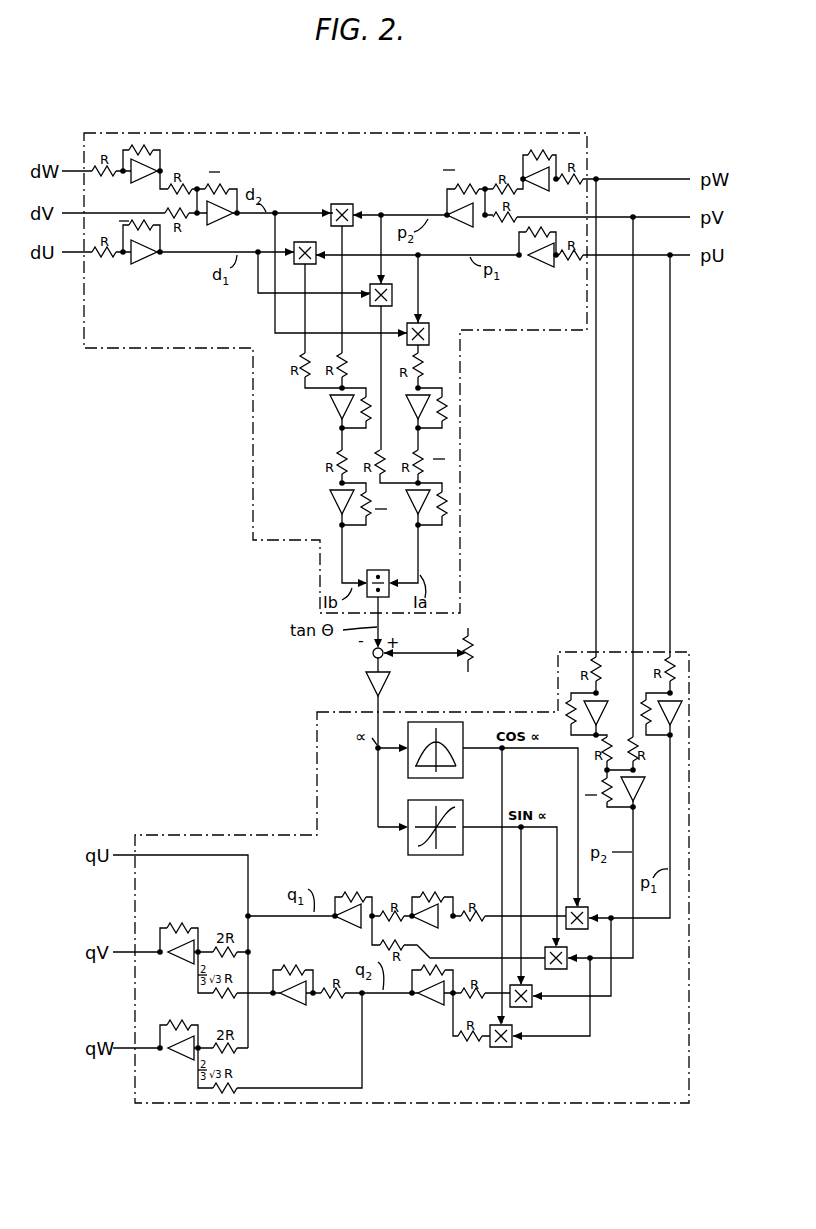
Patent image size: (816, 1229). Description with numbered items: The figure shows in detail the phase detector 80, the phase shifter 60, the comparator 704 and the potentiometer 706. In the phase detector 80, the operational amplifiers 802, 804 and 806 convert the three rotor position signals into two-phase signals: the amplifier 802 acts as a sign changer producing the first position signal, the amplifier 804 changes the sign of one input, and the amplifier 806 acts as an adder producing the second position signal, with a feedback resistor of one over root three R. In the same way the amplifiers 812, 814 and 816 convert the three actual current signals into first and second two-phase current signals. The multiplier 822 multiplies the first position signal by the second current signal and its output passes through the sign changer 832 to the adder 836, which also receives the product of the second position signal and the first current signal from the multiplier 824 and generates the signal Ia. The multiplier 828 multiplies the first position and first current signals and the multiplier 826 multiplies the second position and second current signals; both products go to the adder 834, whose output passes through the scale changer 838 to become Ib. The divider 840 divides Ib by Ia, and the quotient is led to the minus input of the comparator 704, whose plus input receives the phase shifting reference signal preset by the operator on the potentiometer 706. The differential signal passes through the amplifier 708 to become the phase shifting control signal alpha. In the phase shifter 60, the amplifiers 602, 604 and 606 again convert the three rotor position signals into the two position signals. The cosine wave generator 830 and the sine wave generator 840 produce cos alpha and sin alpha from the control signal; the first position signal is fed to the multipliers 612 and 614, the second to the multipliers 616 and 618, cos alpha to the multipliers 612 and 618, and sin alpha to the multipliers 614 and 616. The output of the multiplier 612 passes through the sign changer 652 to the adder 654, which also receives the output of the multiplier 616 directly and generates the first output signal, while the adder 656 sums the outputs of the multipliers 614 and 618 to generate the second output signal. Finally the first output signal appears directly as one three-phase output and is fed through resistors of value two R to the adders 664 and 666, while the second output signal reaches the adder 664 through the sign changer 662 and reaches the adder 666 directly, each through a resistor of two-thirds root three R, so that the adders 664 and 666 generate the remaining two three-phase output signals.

The phase detector 80 is at (293, 131).
The phase shifter 60 is at (313, 756).
The operational amplifier 802 is at (537, 269).
The operational amplifier 804 is at (541, 190).
The operational amplifier 806 is at (450, 226).
The operational amplifier 812 is at (149, 259).
The operational amplifier 814 is at (143, 182).
The operational amplifier 816 is at (214, 224).
The multiplier 822 is at (430, 329).
The multiplier 824 is at (393, 297).
The multiplier 826 is at (350, 204).
The multiplier 828 is at (305, 242).
The operational amplifier 832 is at (432, 401).
The operational amplifier 834 is at (330, 405).
The operational amplifier 836 is at (432, 500).
The operational amplifier 838 is at (332, 500).
The divider 840 is at (379, 569).
The comparator 704 is at (372, 656).
The potentiometer 706 is at (462, 648).
The amplifier 708 is at (391, 683).
The cosine wave generator 830 is at (450, 778).
The operational amplifier 602 is at (680, 713).
The operational amplifier 604 is at (583, 714).
The operational amplifier 606 is at (641, 792).
The multiplier 612 is at (572, 907).
The multiplier 614 is at (531, 990).
The multiplier 616 is at (560, 948).
The multiplier 618 is at (512, 1031).
The operational amplifier 652 is at (432, 930).
The operational amplifier 654 is at (355, 928).
The operational amplifier 656 is at (432, 1008).
The operational amplifier 662 is at (293, 1007).
The operational amplifier 664 is at (183, 965).
The operational amplifier 666 is at (183, 1061).